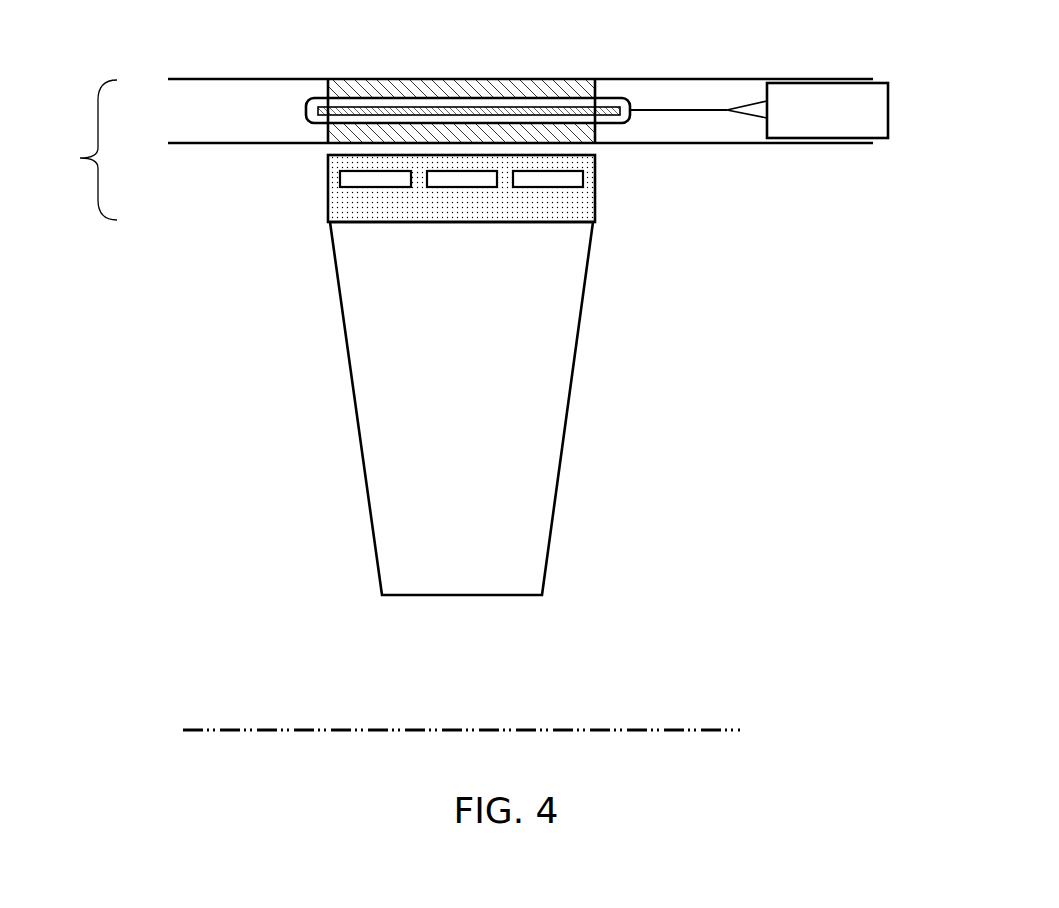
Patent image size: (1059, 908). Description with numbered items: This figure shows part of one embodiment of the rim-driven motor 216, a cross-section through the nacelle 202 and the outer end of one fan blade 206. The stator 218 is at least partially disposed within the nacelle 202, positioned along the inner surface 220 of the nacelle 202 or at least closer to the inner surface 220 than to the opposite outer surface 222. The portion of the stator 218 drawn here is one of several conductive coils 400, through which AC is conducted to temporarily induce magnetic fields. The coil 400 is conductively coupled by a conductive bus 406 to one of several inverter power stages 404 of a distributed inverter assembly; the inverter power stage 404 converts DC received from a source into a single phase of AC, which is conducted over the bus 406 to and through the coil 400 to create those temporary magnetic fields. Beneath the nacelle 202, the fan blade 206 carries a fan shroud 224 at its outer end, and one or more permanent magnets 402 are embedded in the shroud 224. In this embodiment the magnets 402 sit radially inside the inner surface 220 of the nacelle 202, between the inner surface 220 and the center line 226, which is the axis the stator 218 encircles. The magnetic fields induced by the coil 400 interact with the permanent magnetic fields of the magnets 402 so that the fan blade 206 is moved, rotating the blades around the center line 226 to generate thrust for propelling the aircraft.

The nacelle 202 is at (506, 109).
The rim-driven motor 216 is at (80, 158).
The stator 218 is at (251, 124).
The inner surface 220 is at (255, 144).
The outer surface 222 is at (280, 78).
The fan shroud 224 is at (497, 224).
The center line 226 is at (634, 727).
The fan blade 206 is at (590, 336).
The conductive coil 400 is at (522, 103).
The permanent magnet 402 is at (522, 190).
The inverter power stage 404 is at (845, 124).
The conductive bus 406 is at (656, 108).